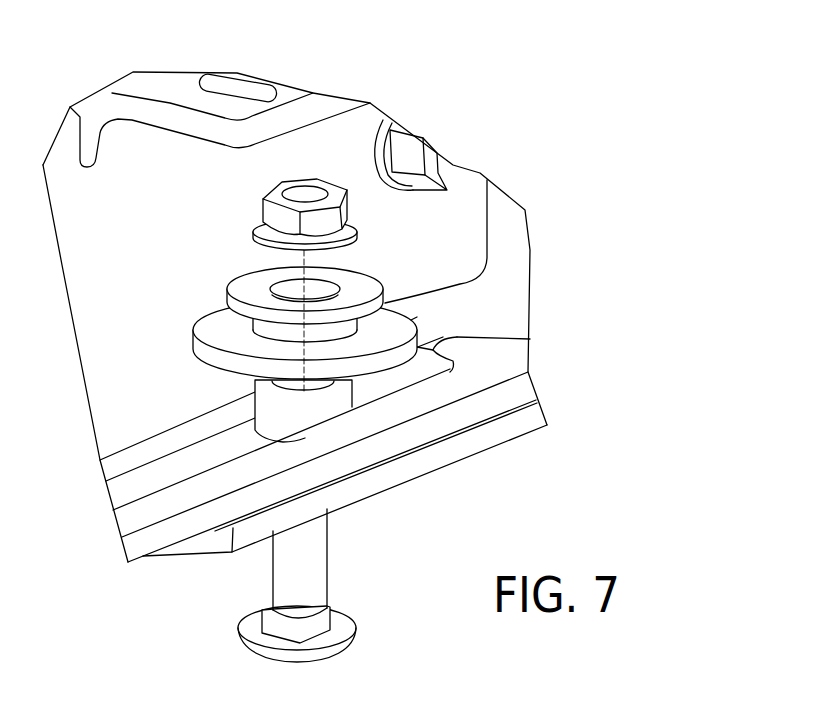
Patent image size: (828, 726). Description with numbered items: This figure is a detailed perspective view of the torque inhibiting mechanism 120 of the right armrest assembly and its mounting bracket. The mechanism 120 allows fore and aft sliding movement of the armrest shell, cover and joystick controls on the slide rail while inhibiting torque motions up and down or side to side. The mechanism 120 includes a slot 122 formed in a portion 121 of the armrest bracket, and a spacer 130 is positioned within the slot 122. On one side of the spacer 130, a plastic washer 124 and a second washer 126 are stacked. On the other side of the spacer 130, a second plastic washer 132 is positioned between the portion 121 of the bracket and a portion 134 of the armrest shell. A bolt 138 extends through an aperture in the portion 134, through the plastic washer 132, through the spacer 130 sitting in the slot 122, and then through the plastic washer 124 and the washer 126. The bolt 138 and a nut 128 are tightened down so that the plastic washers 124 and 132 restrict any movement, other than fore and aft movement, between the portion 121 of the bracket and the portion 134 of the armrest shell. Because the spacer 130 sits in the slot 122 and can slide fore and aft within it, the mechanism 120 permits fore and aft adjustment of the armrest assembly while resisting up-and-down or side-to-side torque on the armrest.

The torque inhibiting mechanism 120 is at (606, 111).
The portion of armrest bracket 121 is at (466, 387).
The slot 122 is at (385, 299).
The plastic washer 124 is at (400, 330).
The second washer 126 is at (360, 278).
The nut 128 is at (327, 180).
The spacer 130 is at (283, 420).
The second plastic washer 132 is at (404, 466).
The portion of armrest shell 134 is at (232, 552).
The bolt 138 is at (310, 600).